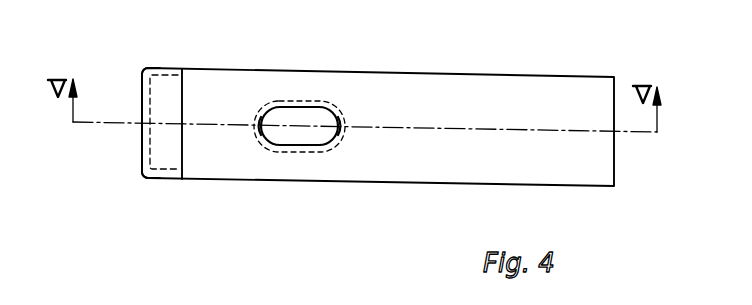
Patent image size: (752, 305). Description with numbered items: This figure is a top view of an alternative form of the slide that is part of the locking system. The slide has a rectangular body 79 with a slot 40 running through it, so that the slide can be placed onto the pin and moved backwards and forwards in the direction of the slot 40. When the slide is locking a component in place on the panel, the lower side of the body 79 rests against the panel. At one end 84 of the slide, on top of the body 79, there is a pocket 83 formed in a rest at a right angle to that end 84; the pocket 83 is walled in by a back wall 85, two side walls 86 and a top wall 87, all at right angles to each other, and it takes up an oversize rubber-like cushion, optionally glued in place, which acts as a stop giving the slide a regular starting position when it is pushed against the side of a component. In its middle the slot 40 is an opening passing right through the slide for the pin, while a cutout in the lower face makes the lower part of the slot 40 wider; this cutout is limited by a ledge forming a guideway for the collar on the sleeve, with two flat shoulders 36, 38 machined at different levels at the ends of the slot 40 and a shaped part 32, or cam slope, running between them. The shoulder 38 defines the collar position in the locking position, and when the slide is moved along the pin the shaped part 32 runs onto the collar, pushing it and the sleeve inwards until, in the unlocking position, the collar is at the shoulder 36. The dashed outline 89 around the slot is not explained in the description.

The rectangular body 79 is at (412, 163).
The pocket 83 is at (178, 70).
The end of the slide 84 is at (141, 151).
The back wall 85 is at (142, 97).
The side walls 86 is at (158, 67).
The top wall 87 is at (165, 122).
The slot 40 is at (298, 90).
The chamfered slot edge 89 is at (322, 105).
The shoulder 36 is at (258, 140).
The shoulder 38 is at (341, 143).
The shaped part 32 is at (297, 152).